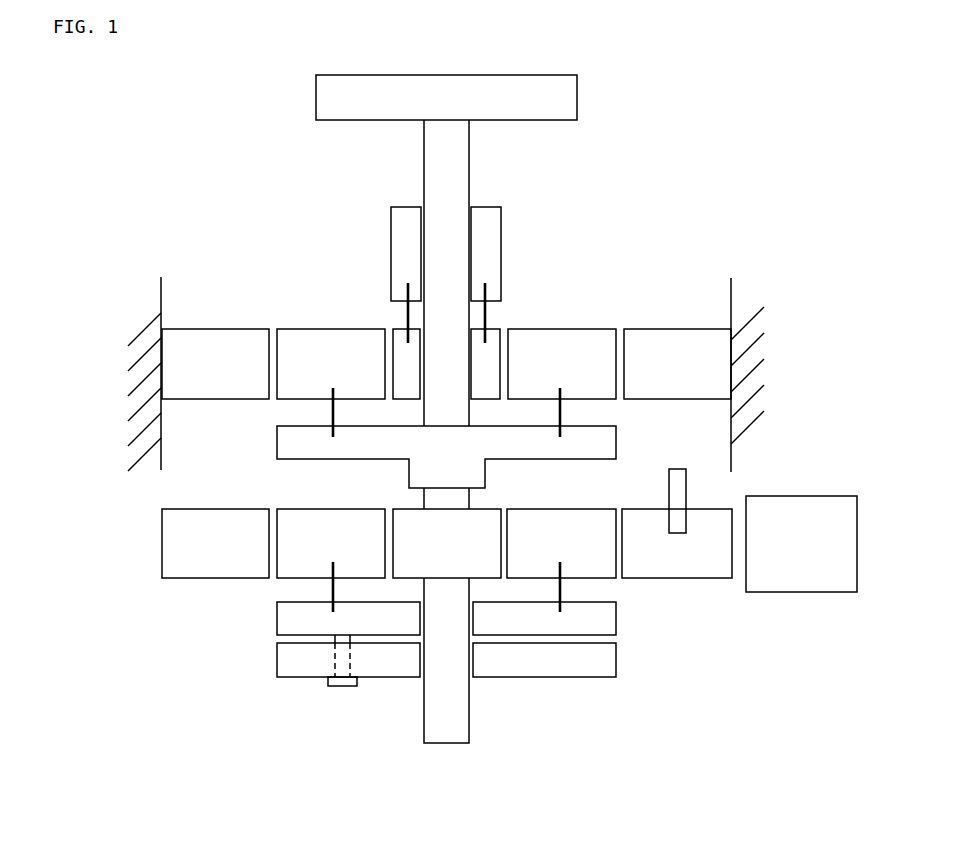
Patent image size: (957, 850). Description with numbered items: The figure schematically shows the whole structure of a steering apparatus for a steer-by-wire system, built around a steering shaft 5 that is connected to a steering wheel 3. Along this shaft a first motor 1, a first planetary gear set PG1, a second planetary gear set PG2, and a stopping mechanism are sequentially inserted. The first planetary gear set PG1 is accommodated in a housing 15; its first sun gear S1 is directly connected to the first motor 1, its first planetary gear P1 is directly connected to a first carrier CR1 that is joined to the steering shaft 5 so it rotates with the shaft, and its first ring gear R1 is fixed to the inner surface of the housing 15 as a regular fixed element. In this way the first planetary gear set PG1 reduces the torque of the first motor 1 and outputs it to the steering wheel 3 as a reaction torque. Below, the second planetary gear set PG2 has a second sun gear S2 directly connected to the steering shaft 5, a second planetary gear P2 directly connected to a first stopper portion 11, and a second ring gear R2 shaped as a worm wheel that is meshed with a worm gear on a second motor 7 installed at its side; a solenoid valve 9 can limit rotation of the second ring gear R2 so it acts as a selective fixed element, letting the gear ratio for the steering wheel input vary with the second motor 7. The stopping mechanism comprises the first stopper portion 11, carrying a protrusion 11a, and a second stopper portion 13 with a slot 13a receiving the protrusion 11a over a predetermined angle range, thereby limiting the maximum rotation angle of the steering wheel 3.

The first motor 1 is at (501, 234).
The steering wheel 3 is at (577, 93).
The steering shaft 5 is at (469, 155).
The second motor 7 is at (807, 503).
The solenoid valve 9 is at (686, 478).
The first stopper portion 11 is at (604, 618).
The protrusion 11a is at (343, 686).
The second stopper portion 13 is at (604, 662).
The slot 13a is at (333, 662).
The housing 15 is at (755, 371).
The first planetary gear set PG1 is at (573, 312).
The second planetary gear set PG2 is at (176, 587).
The first ring gear R1 is at (220, 338).
The first planetary gear P1 is at (318, 338).
The first sun gear S1 is at (397, 333).
The first carrier CR1 is at (616, 447).
The second ring gear R2 is at (162, 545).
The second planetary gear P2 is at (282, 500).
The second sun gear S2 is at (490, 570).